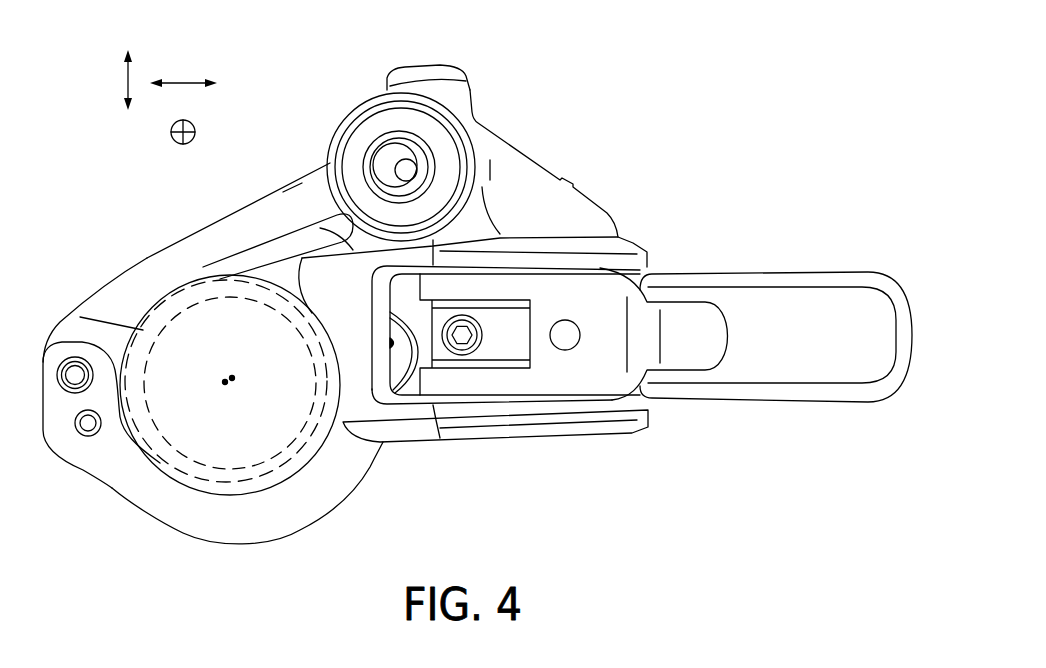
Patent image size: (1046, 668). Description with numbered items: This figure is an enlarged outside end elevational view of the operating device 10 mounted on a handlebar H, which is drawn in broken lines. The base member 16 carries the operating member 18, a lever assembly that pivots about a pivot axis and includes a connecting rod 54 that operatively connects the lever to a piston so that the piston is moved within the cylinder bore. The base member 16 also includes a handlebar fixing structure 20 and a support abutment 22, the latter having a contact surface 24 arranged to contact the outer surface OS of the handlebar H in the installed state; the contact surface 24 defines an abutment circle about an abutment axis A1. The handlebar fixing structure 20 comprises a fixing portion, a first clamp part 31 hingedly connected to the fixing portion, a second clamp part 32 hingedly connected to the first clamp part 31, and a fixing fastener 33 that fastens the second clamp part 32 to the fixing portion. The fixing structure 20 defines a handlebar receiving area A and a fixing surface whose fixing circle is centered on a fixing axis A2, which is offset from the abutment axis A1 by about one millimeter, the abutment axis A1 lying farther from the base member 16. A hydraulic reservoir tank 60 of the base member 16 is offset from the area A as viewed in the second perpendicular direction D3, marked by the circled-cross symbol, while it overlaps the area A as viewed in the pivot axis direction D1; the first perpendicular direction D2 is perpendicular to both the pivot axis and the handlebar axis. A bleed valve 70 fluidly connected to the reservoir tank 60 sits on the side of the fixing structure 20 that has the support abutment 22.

The operating device 10 is at (686, 44).
The base member 16 is at (540, 158).
The operating member 18 is at (773, 262).
The handlebar fixing structure 20 is at (143, 256).
The support abutment 22 is at (323, 250).
The contact surface 24 is at (333, 339).
The first clamp part 31 is at (280, 539).
The second clamp part 32 is at (207, 228).
The fixing fastener 33 is at (82, 436).
The connecting rod 54 is at (480, 347).
The hydraulic reservoir tank 60 is at (510, 150).
The bleed valve 70 is at (407, 70).
The pivot axis direction D1 is at (125, 82).
The first perpendicular direction D2 is at (183, 83).
The second perpendicular direction D3 is at (195, 139).
The handlebar receiving area A is at (212, 348).
The abutment axis A1 is at (225, 384).
The fixing axis A2 is at (233, 381).
The handlebar H is at (191, 497).
The outer surface OS is at (128, 432).